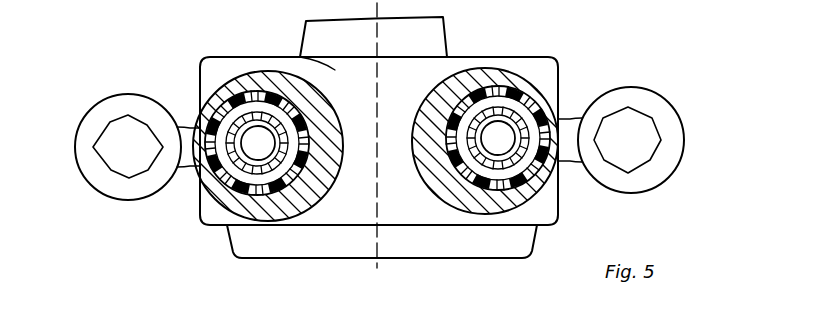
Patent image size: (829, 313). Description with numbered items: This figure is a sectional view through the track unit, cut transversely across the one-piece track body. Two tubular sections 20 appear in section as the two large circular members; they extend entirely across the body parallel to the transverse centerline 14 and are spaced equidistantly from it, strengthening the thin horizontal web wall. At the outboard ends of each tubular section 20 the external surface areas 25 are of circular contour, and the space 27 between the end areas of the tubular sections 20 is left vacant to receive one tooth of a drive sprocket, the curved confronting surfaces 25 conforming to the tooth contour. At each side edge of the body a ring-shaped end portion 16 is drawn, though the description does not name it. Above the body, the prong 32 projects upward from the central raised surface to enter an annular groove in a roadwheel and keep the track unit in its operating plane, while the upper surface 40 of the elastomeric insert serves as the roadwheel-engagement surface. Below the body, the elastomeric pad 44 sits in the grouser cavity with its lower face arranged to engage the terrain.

The transverse centerline 14 is at (378, 130).
The attachment rings 16 is at (87, 132).
The tubular sections 20 is at (306, 212).
The external surface areas 25 is at (337, 108).
The space 27 is at (353, 100).
The prong 32 is at (433, 38).
The upper surface 40 is at (552, 56).
The elastomeric pad 44 is at (513, 246).